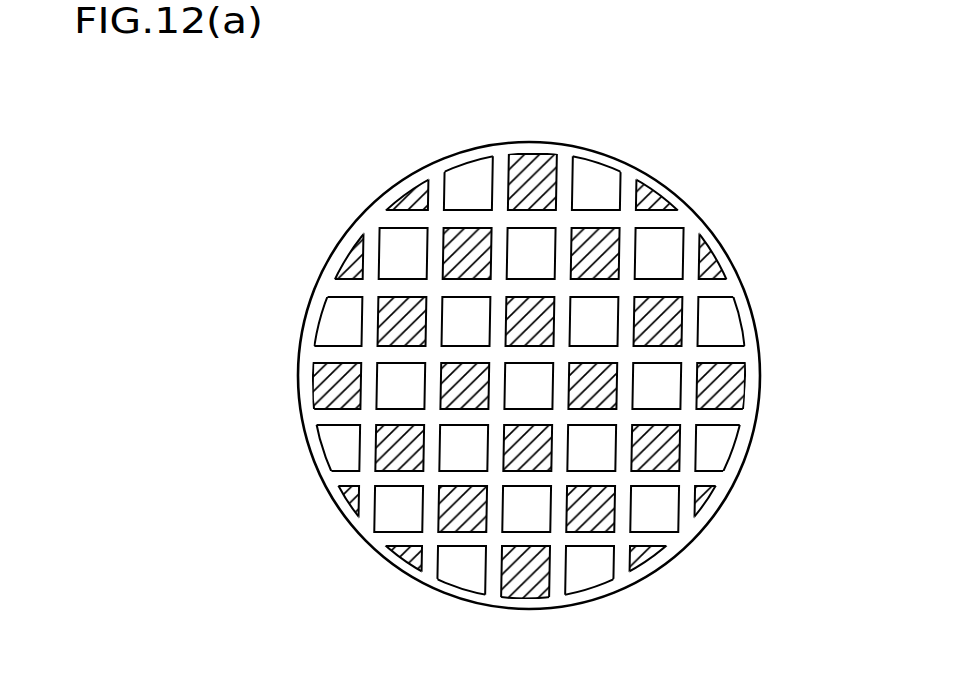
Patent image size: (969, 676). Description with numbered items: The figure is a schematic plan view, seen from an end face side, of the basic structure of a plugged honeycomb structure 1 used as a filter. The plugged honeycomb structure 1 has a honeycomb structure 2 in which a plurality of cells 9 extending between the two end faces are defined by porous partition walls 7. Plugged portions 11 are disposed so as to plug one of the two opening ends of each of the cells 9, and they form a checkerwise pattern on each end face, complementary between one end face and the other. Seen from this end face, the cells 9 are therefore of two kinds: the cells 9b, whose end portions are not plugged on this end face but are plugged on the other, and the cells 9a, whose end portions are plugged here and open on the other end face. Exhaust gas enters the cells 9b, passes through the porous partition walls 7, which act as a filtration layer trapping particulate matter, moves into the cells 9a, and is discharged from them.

The plugged honeycomb structure 1 is at (501, 368).
The honeycomb structure 2 is at (756, 418).
The porous partition walls 7 is at (653, 290).
The cells 9 is at (199, 249).
The cells plugged on the inlet end face 9a is at (468, 260).
The cells open on the inlet end face 9b is at (453, 315).
The plugged portions 11 is at (460, 235).